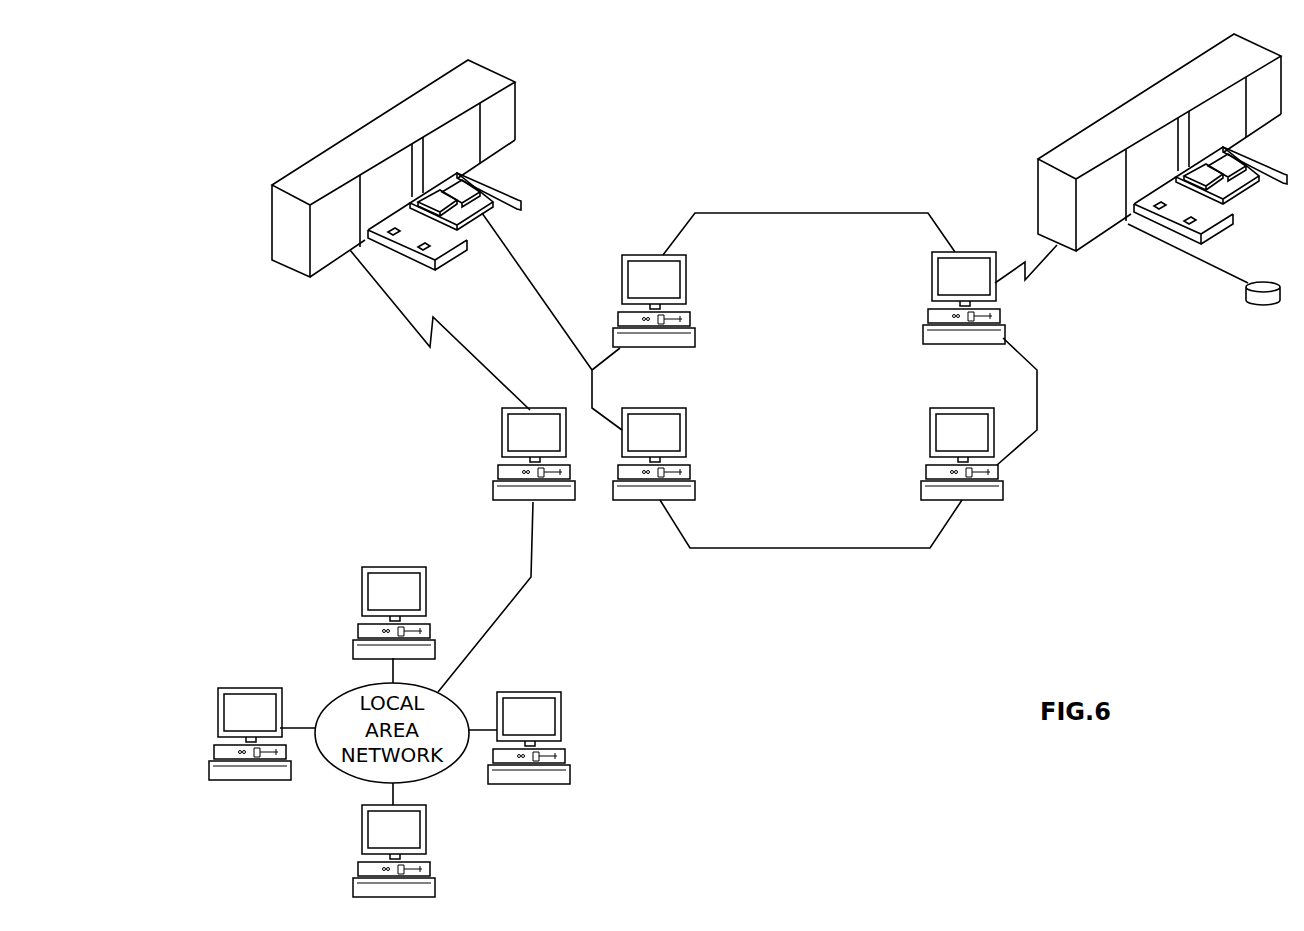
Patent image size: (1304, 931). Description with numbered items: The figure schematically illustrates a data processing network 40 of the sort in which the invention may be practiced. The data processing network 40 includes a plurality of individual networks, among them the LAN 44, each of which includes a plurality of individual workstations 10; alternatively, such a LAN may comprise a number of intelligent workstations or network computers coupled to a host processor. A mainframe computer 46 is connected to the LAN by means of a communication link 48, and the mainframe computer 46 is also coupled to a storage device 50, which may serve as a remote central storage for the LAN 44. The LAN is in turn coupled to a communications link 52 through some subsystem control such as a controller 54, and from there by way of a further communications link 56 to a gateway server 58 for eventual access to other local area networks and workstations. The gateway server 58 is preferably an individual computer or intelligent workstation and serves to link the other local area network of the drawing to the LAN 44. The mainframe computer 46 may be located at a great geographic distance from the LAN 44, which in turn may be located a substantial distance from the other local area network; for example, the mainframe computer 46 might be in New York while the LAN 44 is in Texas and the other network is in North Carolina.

The workstation 10 is at (638, 255).
The data processing network 40 is at (845, 213).
The LAN 44 is at (803, 366).
The mainframe computer 46 is at (1110, 113).
The communication link 48 is at (1037, 266).
The storage device 50 is at (1257, 303).
The communications link 52 is at (527, 272).
The controller 54 is at (342, 142).
The communications link 56 is at (392, 310).
The gateway server 58 is at (503, 410).